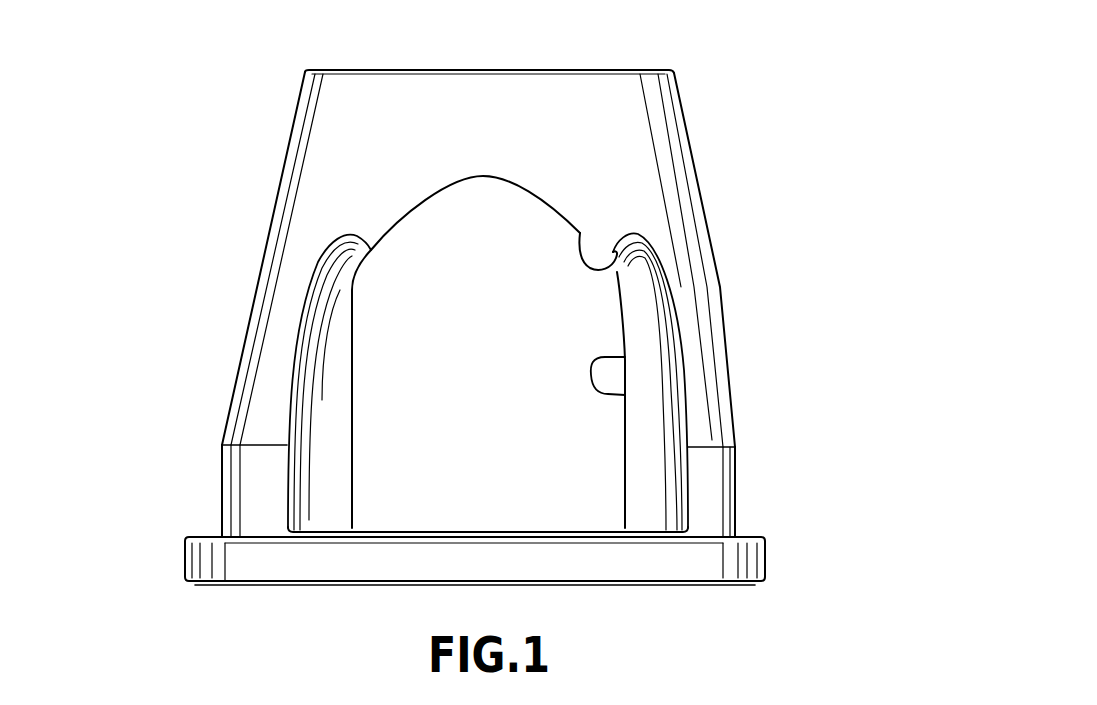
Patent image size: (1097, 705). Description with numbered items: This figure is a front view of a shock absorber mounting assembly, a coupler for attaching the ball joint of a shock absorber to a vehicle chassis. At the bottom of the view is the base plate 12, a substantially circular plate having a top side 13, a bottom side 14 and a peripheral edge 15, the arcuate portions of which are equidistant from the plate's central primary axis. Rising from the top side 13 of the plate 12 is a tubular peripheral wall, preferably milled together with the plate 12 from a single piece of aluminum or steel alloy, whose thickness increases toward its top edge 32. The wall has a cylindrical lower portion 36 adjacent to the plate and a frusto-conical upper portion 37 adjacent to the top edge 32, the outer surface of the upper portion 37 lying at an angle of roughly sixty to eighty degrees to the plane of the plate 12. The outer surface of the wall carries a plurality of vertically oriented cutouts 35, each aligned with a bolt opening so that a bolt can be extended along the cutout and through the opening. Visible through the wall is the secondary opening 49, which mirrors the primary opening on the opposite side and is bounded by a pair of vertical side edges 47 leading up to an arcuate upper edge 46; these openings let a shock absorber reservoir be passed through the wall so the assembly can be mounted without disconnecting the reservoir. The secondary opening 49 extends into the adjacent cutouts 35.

The base plate 12 is at (185, 562).
The top side 13 is at (205, 537).
The bottom side 14 is at (268, 583).
The peripheral edge 15 is at (767, 563).
The top edge 32 is at (577, 70).
The cutouts 35 is at (680, 320).
The lower portion 36 is at (219, 463).
The upper portion 37 is at (280, 183).
The arcuate upper edge 46 is at (537, 191).
The side edges 47 is at (626, 357).
The secondary opening 49 is at (583, 230).